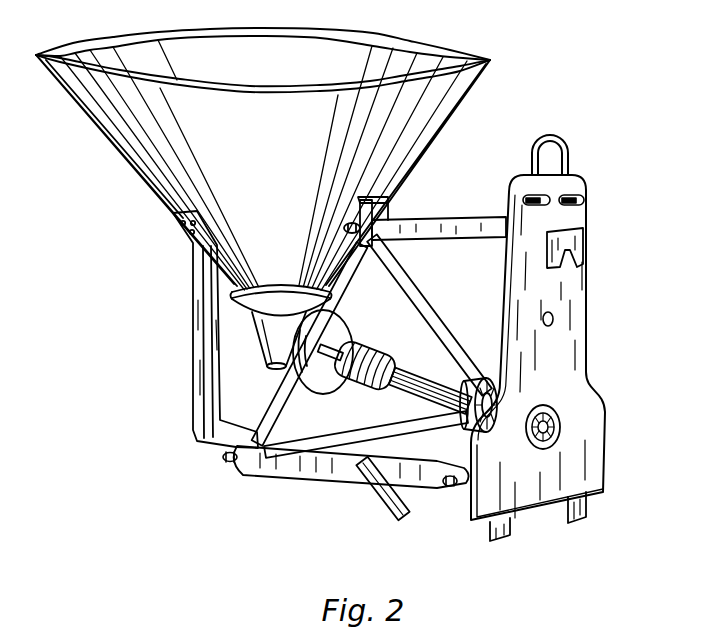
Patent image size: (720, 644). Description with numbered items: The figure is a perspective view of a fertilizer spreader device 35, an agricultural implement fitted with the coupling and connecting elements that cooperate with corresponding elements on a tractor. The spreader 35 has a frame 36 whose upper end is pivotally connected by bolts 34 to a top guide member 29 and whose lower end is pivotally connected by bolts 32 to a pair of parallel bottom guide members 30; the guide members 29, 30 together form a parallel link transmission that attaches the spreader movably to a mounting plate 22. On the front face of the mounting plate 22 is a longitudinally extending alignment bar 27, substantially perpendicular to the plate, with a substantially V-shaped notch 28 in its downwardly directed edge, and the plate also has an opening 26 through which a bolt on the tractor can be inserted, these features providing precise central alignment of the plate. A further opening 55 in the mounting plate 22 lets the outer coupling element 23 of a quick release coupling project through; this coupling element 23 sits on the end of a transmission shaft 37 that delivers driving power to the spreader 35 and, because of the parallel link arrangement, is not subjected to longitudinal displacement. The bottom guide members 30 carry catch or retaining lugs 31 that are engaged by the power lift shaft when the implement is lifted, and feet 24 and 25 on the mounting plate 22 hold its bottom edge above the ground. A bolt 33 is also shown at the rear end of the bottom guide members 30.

The mounting plate 22 is at (574, 379).
The outer coupling element 23 is at (560, 422).
The foot 24 is at (493, 540).
The foot 25 is at (585, 506).
The opening 26 is at (556, 314).
The alignment bar 27 is at (583, 230).
The V-shaped notch 28 is at (572, 261).
The top guide member 29 is at (443, 226).
The bottom guide members 30 is at (326, 480).
The retaining lugs 31 is at (394, 521).
The bolts 32 is at (233, 465).
The bolt 33 is at (453, 491).
The bolts 34 is at (345, 224).
The fertilizer spreader device 35 is at (168, 184).
The frame 36 is at (283, 372).
The transmission shaft 37 is at (395, 391).
The opening 55 is at (527, 428).